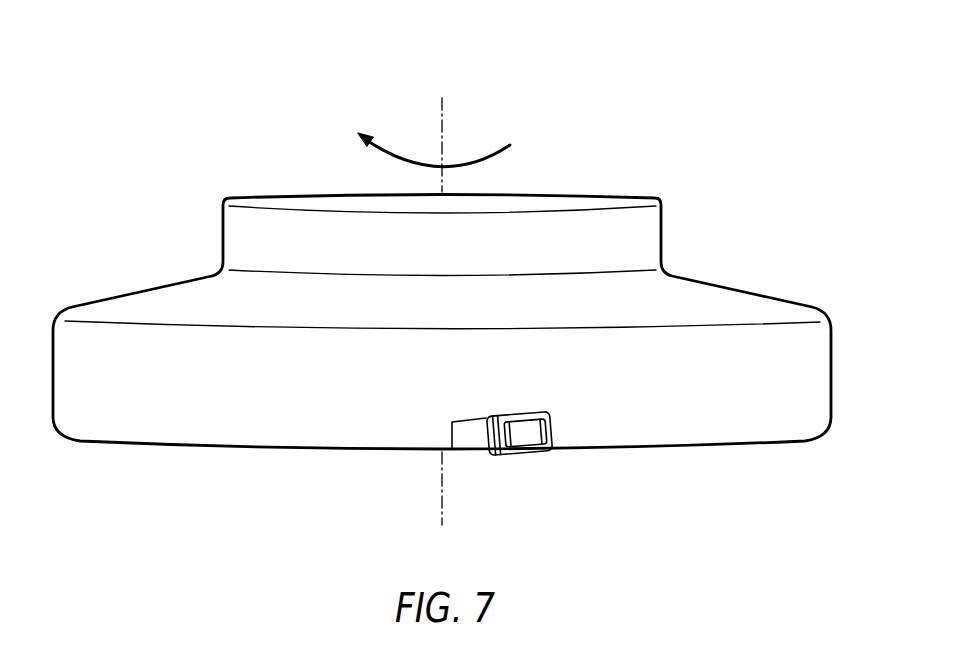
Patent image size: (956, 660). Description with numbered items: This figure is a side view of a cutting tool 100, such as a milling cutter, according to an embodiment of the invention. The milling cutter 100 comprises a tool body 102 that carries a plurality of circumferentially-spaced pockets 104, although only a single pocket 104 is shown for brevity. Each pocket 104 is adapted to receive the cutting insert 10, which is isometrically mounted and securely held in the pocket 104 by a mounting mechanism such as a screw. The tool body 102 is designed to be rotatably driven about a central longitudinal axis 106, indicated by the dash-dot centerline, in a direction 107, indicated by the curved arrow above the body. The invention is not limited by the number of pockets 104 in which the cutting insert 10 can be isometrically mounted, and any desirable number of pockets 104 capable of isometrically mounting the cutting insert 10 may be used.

The cutting tool 100 is at (733, 111).
The tool body 102 is at (746, 278).
The pocket 104 is at (468, 452).
The cutting insert 10 is at (529, 459).
The central longitudinal axis 106 is at (444, 120).
The direction 107 is at (505, 150).